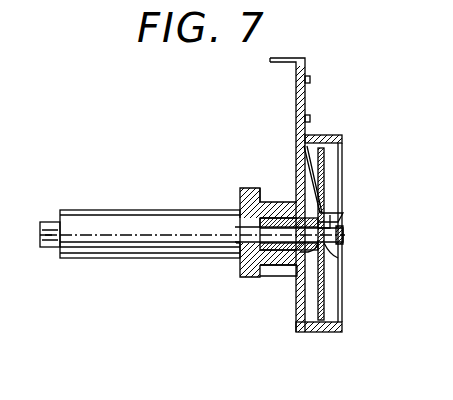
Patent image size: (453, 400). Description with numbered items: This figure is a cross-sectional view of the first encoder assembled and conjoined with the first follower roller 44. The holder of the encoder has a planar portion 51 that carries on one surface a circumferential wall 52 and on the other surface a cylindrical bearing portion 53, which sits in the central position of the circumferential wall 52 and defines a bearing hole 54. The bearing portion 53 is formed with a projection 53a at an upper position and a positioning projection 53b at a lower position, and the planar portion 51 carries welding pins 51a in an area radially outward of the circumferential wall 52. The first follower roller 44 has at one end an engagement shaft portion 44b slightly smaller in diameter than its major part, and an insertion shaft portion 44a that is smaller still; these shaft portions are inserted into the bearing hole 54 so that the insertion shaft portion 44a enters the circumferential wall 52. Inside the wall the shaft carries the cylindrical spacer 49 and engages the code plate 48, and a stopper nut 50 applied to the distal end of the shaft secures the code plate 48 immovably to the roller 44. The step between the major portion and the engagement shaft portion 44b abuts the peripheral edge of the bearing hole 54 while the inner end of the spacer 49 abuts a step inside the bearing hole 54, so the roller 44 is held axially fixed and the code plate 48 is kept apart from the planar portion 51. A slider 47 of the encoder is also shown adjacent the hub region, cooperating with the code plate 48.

The first follower roller 44 is at (100, 216).
The insertion shaft portion 44a is at (243, 237).
The engagement shaft portion 44b is at (343, 239).
The slider 47 is at (282, 255).
The code plate 48 is at (325, 288).
The cylindrical spacer 49 is at (320, 267).
The stopper nut 50 is at (343, 214).
The planar portion 51 is at (296, 130).
The welding pins 51a is at (312, 116).
The circumferential wall 52 is at (325, 136).
The cylindrical bearing portion 53 is at (265, 202).
The projection 53a is at (258, 188).
The positioning projection 53b is at (250, 274).
The bearing hole 54 is at (238, 244).